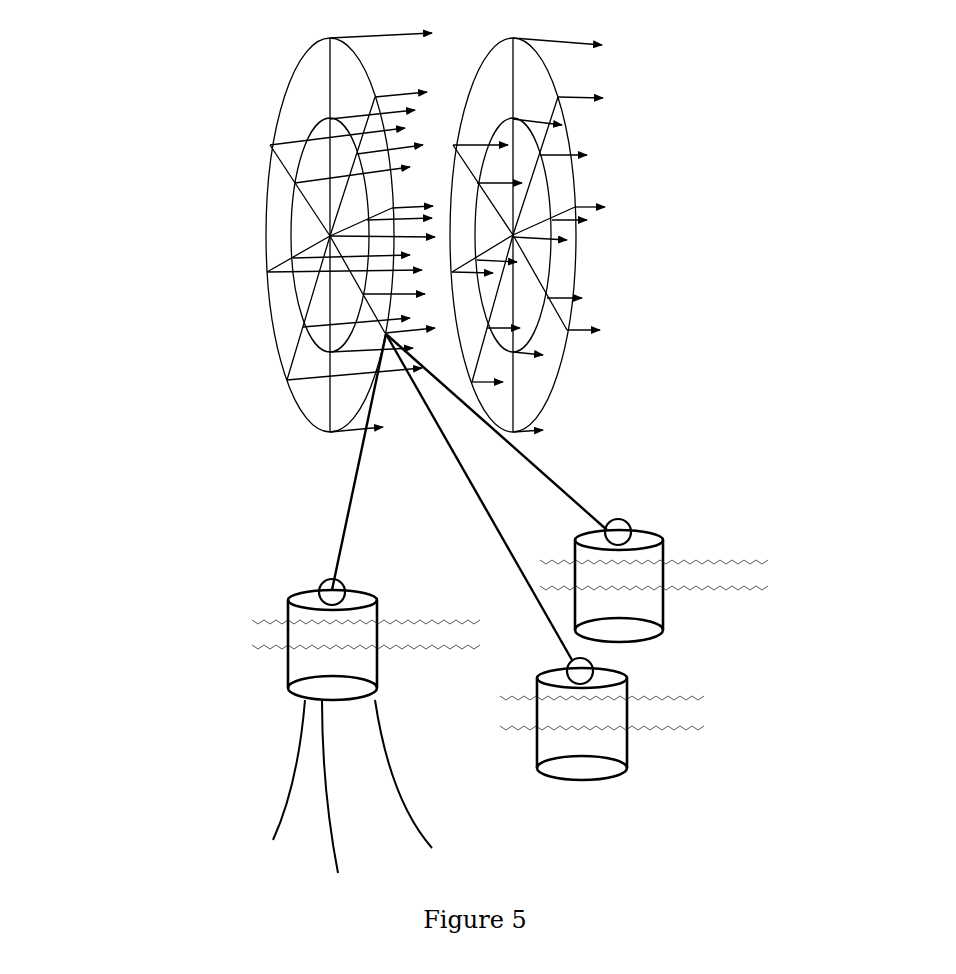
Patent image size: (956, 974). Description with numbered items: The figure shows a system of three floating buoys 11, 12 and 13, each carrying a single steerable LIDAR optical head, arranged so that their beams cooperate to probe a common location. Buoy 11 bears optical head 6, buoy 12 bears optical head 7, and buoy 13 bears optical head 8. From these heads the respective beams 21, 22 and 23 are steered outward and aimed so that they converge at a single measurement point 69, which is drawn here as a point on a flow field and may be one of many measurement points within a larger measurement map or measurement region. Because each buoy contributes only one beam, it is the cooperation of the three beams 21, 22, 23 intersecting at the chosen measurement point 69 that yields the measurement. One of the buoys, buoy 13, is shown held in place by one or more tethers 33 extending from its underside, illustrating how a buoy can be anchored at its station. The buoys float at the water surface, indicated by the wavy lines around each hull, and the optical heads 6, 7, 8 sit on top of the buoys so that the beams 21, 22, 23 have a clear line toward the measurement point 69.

The measurement point 69 is at (293, 348).
The beam 23 is at (342, 543).
The beam 21 is at (580, 500).
The beam 22 is at (505, 540).
The buoy 13 is at (288, 660).
The LIDAR optical head 8 is at (320, 591).
The tether 33 is at (300, 732).
The buoy 11 is at (665, 605).
The LIDAR optical head 6 is at (630, 527).
The buoy 12 is at (627, 747).
The LIDAR optical head 7 is at (592, 665).